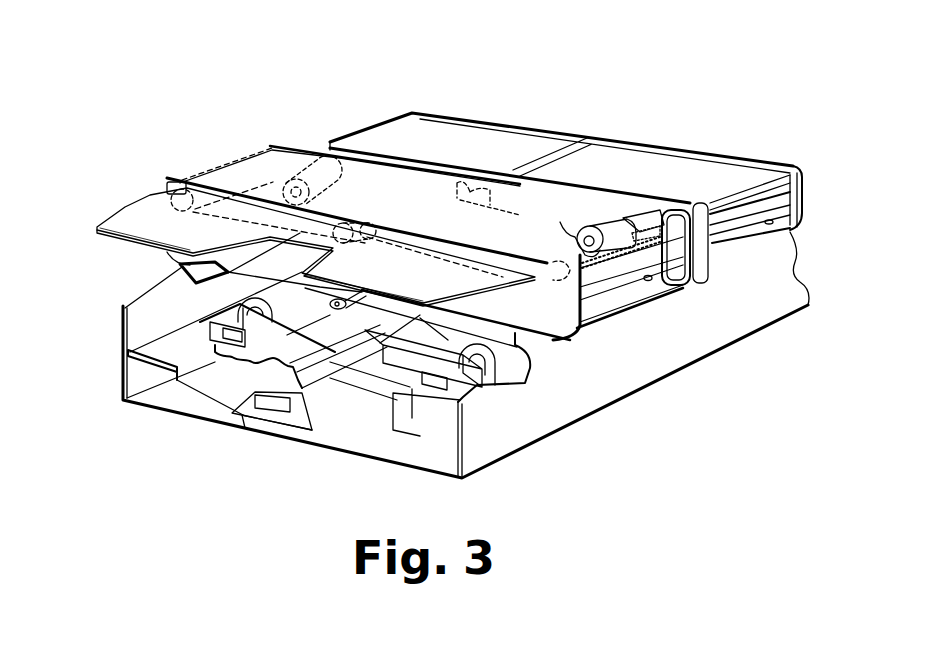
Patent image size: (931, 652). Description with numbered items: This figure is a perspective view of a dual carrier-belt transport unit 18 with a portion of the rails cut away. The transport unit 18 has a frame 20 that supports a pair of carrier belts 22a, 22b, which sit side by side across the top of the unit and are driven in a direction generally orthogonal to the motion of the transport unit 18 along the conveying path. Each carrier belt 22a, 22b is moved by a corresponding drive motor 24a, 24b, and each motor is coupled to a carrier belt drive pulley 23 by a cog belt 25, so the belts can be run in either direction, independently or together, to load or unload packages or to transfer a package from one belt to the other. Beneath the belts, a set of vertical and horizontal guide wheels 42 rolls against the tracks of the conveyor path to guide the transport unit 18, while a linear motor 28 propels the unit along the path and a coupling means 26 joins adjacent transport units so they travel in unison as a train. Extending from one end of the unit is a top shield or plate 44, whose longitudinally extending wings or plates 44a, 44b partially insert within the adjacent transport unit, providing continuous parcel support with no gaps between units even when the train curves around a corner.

The transport unit 18 is at (344, 118).
The frame 20 is at (283, 340).
The carrier belt 22a is at (705, 177).
The carrier belt 22b is at (443, 118).
The carrier belt drive pulley 23 is at (656, 222).
The drive motor 24a is at (640, 226).
The drive motor 24b is at (270, 150).
The cog belt 25 is at (650, 212).
The coupling means 26 is at (351, 310).
The linear motor 28 is at (263, 423).
The guide wheels 42 is at (465, 398).
The top shield or plate 44 is at (113, 242).
The longitudinally extending wing or plate 44a is at (425, 281).
The plate tab 44b is at (152, 220).